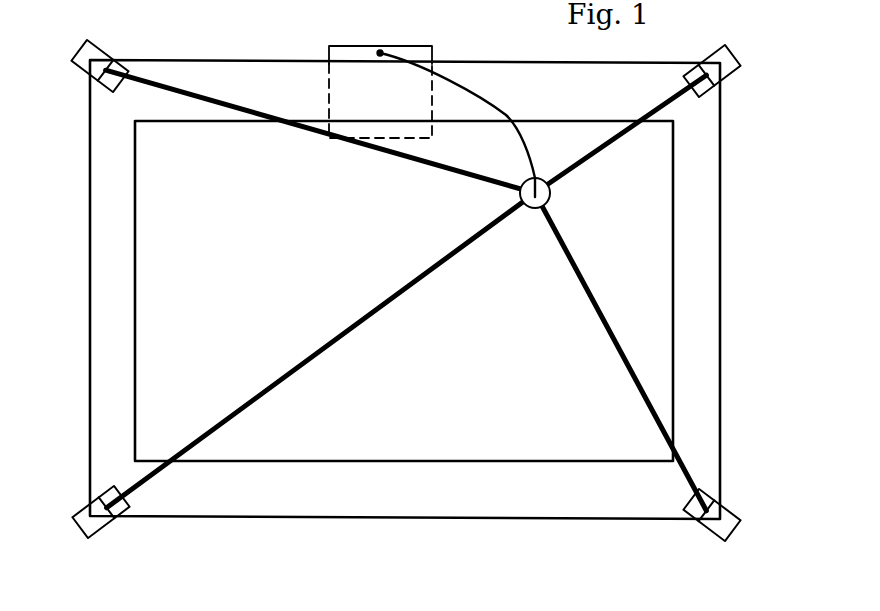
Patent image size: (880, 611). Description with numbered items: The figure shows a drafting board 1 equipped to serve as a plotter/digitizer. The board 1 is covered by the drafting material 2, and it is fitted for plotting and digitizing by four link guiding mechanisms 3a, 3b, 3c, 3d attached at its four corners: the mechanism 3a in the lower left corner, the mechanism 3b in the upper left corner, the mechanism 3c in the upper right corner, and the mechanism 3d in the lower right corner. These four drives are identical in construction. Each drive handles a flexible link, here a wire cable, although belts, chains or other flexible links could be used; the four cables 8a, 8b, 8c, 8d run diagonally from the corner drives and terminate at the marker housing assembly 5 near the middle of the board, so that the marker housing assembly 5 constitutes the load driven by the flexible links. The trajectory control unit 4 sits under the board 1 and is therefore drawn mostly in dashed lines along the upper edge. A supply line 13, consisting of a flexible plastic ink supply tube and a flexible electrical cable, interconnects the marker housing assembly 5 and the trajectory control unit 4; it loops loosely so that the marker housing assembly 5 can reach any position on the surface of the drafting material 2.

The drafting board 1 is at (419, 498).
The drafting material 2 is at (224, 239).
The link guiding mechanism 3a is at (84, 505).
The link guiding mechanism 3b is at (78, 71).
The link guiding mechanism 3c is at (737, 79).
The link guiding mechanism 3d is at (752, 500).
The trajectory control unit 4 is at (328, 88).
The marker housing assembly 5 is at (535, 208).
The cable 8a is at (225, 418).
The cable 8b is at (436, 168).
The cable 8c is at (618, 143).
The cable 8d is at (620, 345).
The supply line 13 is at (510, 119).